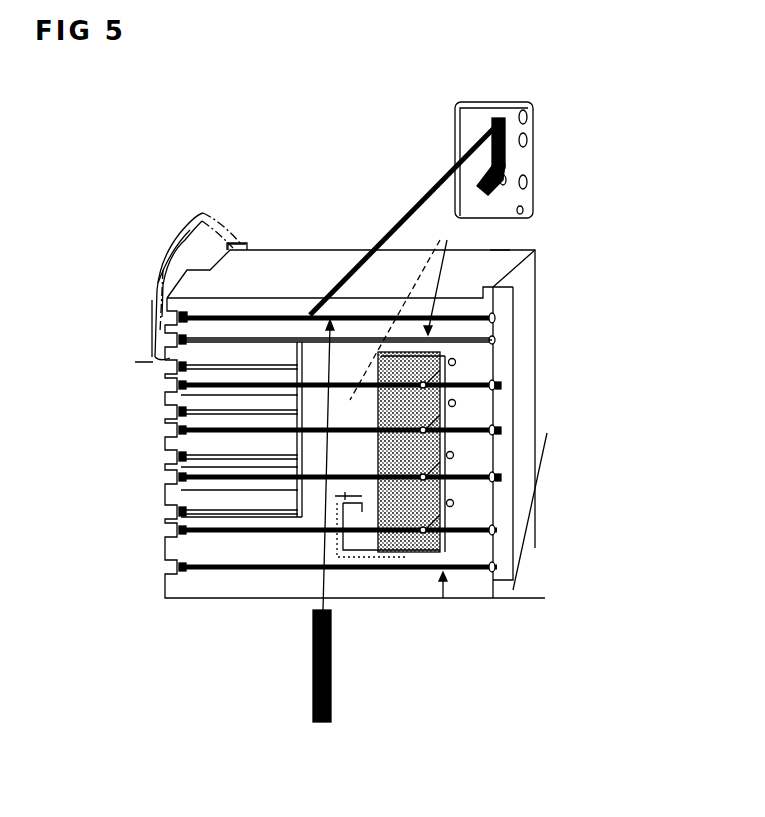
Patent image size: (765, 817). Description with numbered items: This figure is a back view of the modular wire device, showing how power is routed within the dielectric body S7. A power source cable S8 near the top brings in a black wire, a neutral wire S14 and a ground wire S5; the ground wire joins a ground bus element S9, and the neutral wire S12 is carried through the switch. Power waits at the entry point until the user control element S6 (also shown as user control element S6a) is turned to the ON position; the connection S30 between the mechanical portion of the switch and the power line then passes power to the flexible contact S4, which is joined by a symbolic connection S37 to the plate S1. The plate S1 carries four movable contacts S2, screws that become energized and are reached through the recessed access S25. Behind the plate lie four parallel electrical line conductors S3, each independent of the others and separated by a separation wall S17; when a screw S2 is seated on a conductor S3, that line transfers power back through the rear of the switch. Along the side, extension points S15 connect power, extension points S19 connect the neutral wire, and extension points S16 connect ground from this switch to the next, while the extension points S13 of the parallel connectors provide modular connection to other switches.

The power source cable S8 is at (158, 270).
The ground wire S5 is at (200, 213).
The ground bus element S9 is at (243, 247).
The dielectric body S7 is at (283, 281).
The connection between mechanical portion of switch and power line S30 is at (432, 185).
The neutral wire S12 is at (498, 160).
The flexible contact S4 is at (507, 130).
The user control element S6a is at (505, 165).
The recessed access to movable contacts S25 is at (530, 212).
The symbolic connection between the flexible contact and the plate S37 is at (440, 284).
The extension points (connect power from one switch to another) S15 is at (492, 318).
The extension points (connect neutral wire from one switch to another) S19 is at (492, 338).
The movable contacts S2 is at (455, 362).
The extension points (of parallel connectors) for modulator connection to other swit S13 is at (497, 385).
The plate S1 is at (453, 503).
The extension points (connect ground from one switch to another) S16 is at (497, 566).
The user control element S6 is at (482, 598).
The neutral wire (from power source) S14 is at (326, 681).
The separation wall S17 is at (218, 394).
The parallel electrical line conductors S3 is at (210, 527).